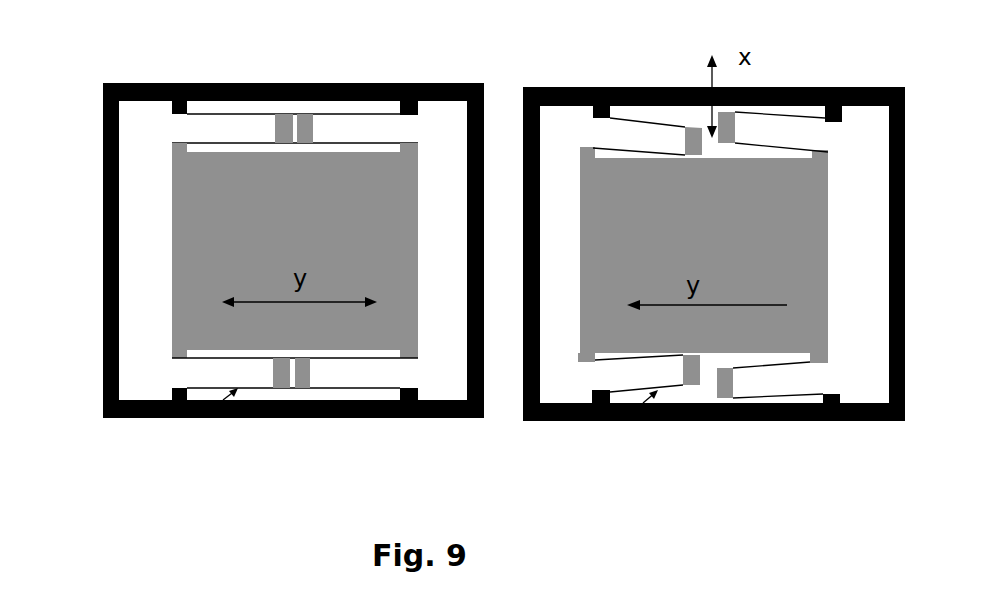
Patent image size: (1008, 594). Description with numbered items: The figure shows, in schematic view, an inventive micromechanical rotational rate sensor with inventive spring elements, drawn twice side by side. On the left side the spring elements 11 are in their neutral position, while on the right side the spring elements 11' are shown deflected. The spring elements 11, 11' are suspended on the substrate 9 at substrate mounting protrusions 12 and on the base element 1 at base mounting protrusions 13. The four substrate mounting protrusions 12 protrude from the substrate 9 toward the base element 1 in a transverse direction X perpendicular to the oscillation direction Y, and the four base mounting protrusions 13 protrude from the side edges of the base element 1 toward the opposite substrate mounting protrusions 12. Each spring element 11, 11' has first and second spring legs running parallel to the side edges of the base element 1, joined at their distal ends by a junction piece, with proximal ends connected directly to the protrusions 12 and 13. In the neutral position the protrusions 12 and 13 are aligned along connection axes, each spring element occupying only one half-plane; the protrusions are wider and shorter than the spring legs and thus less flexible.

The substrate 9 is at (597, 87).
The base element 1 is at (302, 247).
The substrate mounting protrusion 12 is at (174, 110).
The base mounting protrusion 13 is at (180, 157).
The spring element 11 is at (247, 429).
The deflected spring element 11' is at (669, 430).